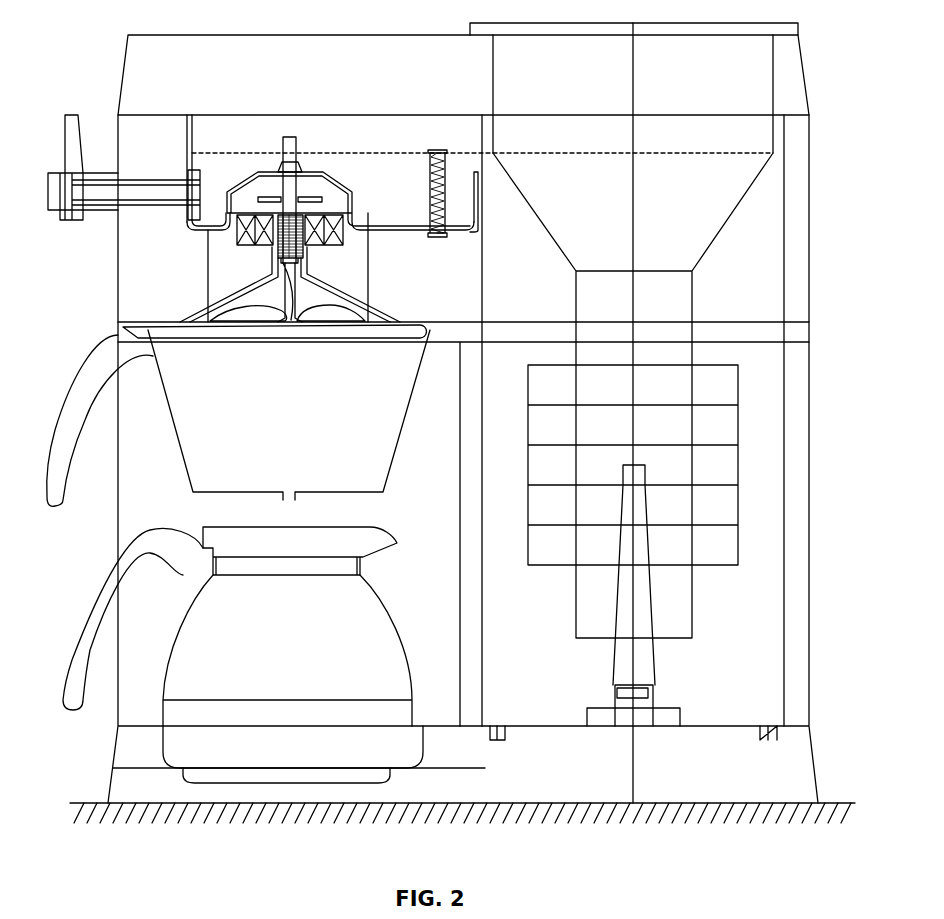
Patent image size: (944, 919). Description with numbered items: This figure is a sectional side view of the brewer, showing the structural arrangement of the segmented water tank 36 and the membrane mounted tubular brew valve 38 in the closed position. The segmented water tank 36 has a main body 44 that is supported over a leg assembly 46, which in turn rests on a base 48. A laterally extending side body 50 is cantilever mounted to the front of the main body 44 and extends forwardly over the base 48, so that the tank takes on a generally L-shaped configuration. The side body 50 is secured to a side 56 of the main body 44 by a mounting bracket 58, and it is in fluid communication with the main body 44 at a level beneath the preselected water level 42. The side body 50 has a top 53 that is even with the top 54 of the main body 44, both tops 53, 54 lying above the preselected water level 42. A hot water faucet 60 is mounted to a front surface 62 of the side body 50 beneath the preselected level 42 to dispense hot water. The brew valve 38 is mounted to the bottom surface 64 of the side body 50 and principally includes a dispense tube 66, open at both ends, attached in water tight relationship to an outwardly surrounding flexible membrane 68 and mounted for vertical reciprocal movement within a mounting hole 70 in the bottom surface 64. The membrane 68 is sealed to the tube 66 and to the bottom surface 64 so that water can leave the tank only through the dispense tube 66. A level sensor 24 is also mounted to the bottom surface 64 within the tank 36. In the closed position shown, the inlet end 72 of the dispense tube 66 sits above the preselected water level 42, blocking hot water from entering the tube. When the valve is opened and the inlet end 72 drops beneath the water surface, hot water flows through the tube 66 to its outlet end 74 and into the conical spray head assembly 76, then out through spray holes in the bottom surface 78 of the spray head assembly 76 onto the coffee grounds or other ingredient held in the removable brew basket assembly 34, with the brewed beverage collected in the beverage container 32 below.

The level sensor 24 is at (480, 205).
The beverage container 32 is at (180, 660).
The brew basket assembly 34 is at (190, 450).
The segmented water tank 36 is at (756, 110).
The membrane mounted tubular brew valve 38 is at (333, 160).
The preselected water level 42 is at (702, 150).
The main body 44 is at (735, 188).
The leg assembly 46 is at (772, 510).
The base 48 is at (220, 795).
The side body 50 is at (195, 223).
The top of side body 53 is at (214, 113).
The top of main body 54 is at (596, 113).
The side of main body 56 is at (478, 302).
The mounting bracket 58 is at (480, 216).
The hot water faucet 60 is at (63, 176).
The front surface 62 is at (185, 140).
The bottom surface 64 is at (226, 232).
The dispense tube 66 is at (300, 140).
The flexible membrane 68 is at (250, 170).
The mounting hole 70 is at (358, 243).
The inlet end 72 is at (290, 140).
The outlet end 74 is at (252, 322).
The conical spray head assembly 76 is at (330, 300).
The bottom surface of spray head assembly 78 is at (320, 322).